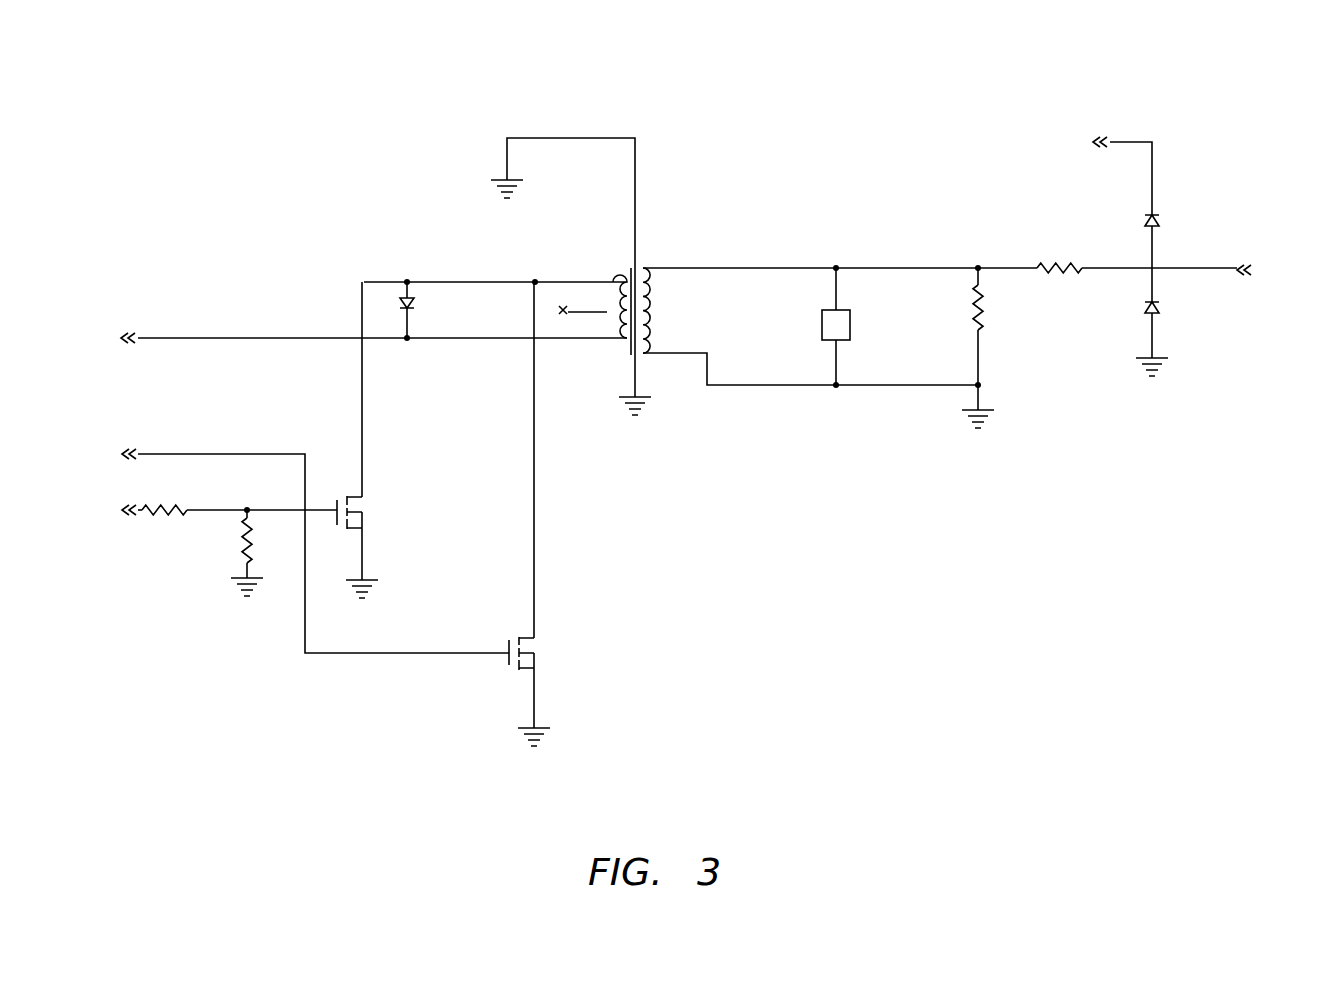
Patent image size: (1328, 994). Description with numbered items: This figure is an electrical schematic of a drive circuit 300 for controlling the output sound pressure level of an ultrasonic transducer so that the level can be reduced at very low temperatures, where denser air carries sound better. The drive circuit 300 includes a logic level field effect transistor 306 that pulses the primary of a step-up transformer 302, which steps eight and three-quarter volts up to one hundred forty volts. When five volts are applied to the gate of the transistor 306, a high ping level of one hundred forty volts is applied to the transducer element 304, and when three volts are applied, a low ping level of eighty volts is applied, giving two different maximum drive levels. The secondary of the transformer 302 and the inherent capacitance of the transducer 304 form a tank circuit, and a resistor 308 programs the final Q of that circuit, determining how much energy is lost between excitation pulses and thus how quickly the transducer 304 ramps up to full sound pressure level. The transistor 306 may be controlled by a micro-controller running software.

The drive circuit 300 is at (299, 96).
The transformer T1 302 is at (686, 190).
The transducer element 304 is at (866, 263).
The logic level field effect transistor 306 is at (370, 482).
The resistor R11 308 is at (1032, 323).